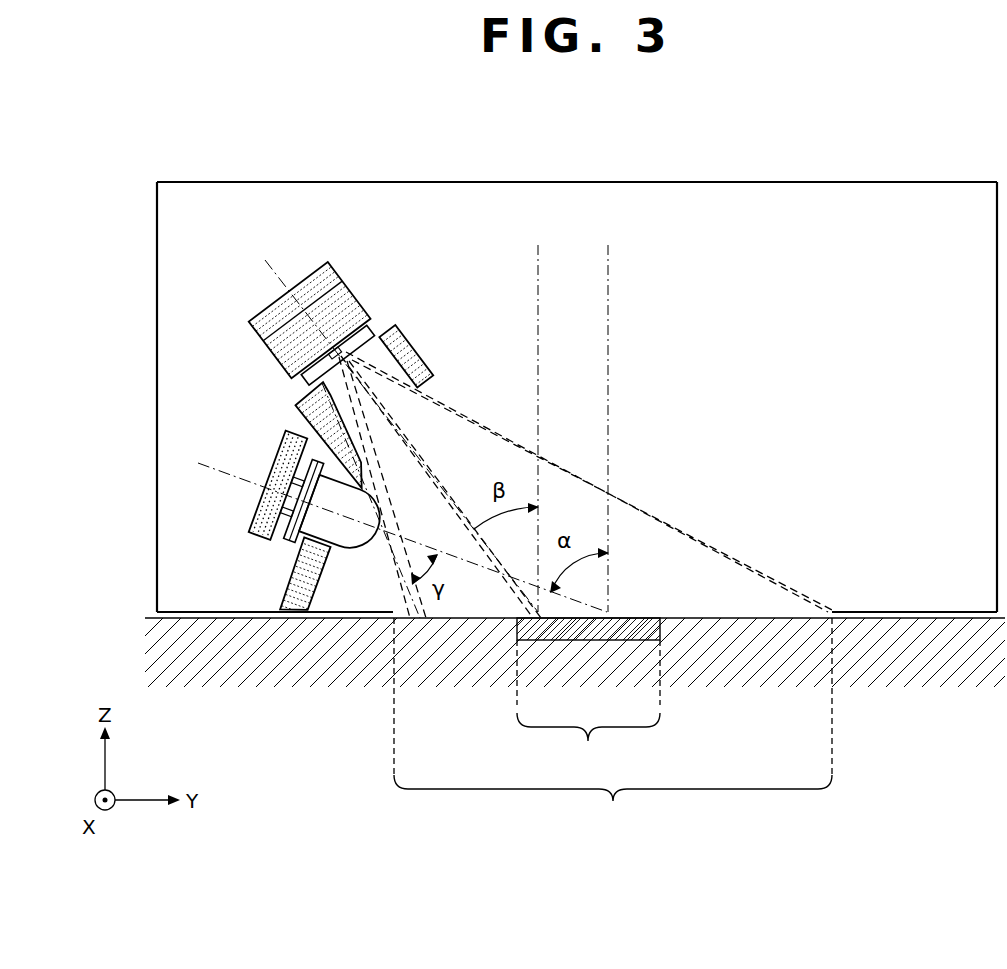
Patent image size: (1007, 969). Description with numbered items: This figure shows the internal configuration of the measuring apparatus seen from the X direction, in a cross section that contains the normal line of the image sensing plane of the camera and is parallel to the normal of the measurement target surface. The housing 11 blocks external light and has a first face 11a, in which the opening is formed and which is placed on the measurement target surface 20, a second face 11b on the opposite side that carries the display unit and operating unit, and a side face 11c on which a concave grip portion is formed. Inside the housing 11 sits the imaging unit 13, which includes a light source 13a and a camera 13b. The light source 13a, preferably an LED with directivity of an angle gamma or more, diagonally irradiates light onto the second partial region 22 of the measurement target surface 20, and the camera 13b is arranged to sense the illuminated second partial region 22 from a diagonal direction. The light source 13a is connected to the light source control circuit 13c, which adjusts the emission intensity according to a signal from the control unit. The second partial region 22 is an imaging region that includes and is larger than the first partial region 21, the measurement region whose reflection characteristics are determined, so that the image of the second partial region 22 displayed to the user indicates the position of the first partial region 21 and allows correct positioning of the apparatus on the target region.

The housing 11 is at (514, 369).
The first face 11a is at (908, 612).
The second face 11b is at (937, 182).
The side face 11c is at (157, 362).
The imaging unit 13 is at (224, 279).
The light source 13a is at (300, 543).
The camera 13b is at (358, 300).
The light source control circuit 13c is at (288, 441).
The measurement target surface 20 is at (951, 618).
The first partial region 21 is at (588, 694).
The second partial region 22 is at (613, 724).